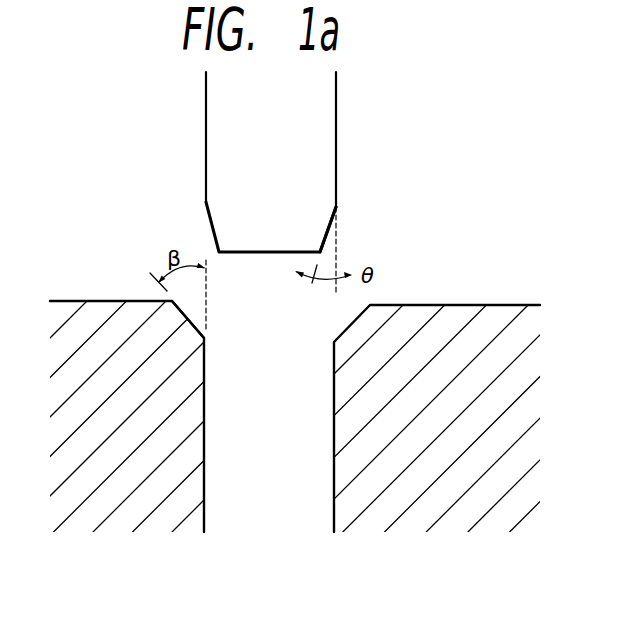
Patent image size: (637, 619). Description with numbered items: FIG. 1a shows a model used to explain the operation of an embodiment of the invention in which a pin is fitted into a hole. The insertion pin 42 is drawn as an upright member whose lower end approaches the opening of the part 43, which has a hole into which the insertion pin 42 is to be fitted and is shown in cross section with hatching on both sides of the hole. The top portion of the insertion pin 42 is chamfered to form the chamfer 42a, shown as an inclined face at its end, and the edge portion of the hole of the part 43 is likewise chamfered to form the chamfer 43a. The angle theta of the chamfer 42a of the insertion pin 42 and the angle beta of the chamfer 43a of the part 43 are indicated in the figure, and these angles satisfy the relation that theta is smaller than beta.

The insertion pin 42 is at (336, 105).
The chamfer of the insertion pin 42a is at (328, 232).
The part having a hole 43 is at (473, 305).
The chamfer of the part 43a is at (183, 305).